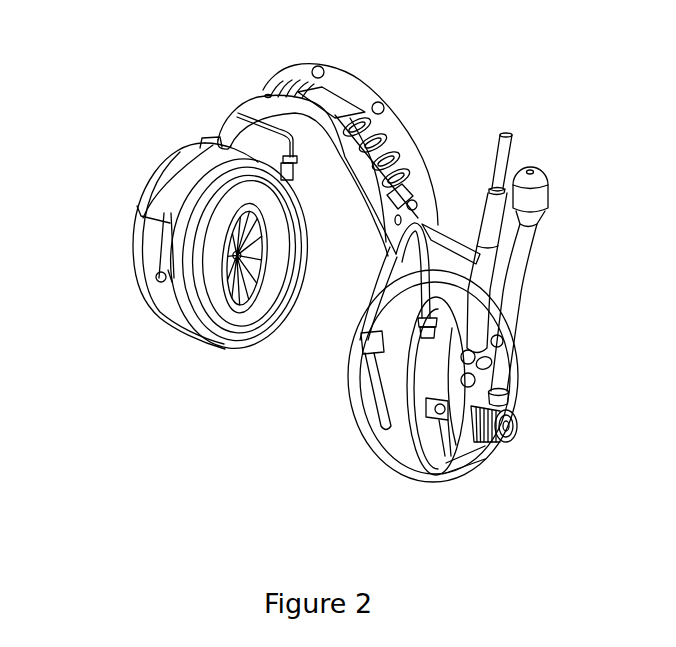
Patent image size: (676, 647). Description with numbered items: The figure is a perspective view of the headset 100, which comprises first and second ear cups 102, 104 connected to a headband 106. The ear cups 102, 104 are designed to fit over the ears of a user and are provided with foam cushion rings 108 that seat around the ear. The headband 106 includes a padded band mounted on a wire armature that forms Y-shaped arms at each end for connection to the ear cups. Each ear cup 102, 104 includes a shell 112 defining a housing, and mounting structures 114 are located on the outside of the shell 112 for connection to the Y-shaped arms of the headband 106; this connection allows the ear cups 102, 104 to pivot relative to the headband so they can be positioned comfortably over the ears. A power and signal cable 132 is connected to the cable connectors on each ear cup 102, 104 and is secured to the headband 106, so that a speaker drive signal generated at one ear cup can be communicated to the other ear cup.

The headset 100 is at (315, 275).
The first ear cup 102 is at (451, 334).
The second ear cup 104 is at (169, 309).
The headband 106 is at (400, 83).
The foam cushion ring 108 is at (226, 360).
The shell 112 is at (440, 388).
The mounting structure 114 is at (369, 403).
The power and signal cable 132 is at (446, 240).